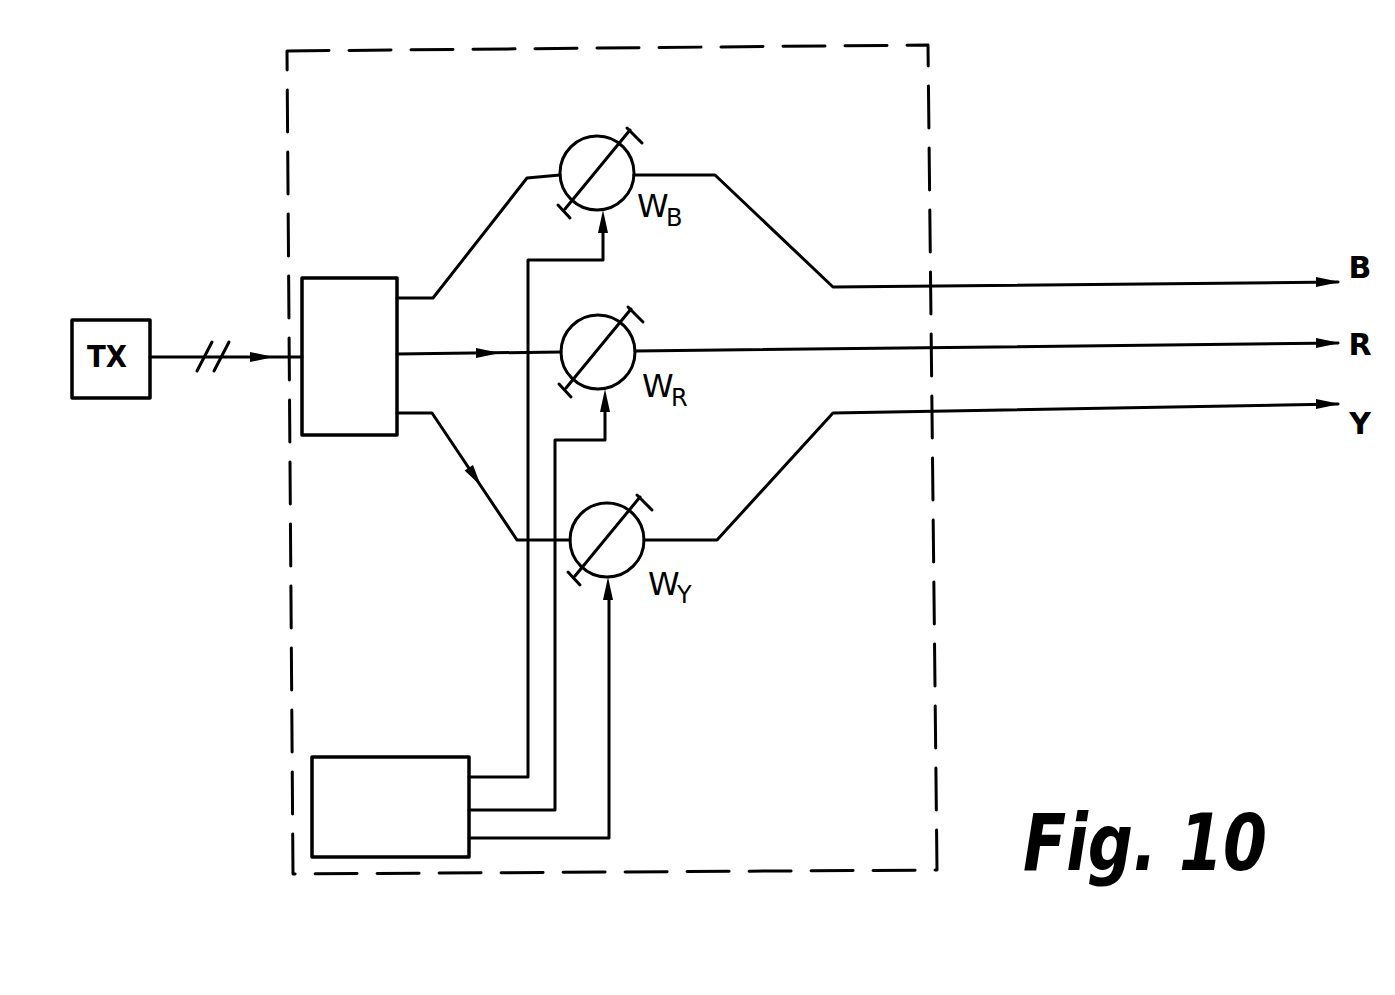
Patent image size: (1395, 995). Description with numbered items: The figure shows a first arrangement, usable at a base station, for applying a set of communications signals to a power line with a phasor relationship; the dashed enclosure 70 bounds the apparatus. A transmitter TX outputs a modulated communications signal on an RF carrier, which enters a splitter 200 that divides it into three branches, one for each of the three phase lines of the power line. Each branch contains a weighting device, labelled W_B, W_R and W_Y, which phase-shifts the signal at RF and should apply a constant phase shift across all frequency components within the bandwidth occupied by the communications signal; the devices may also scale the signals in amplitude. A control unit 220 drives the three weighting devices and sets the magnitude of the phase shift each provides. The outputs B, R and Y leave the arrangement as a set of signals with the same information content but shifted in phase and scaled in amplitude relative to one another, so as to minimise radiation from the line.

The modulator unit 70 is at (889, 98).
The splitter 200 is at (349, 356).
The control unit 220 is at (390, 807).